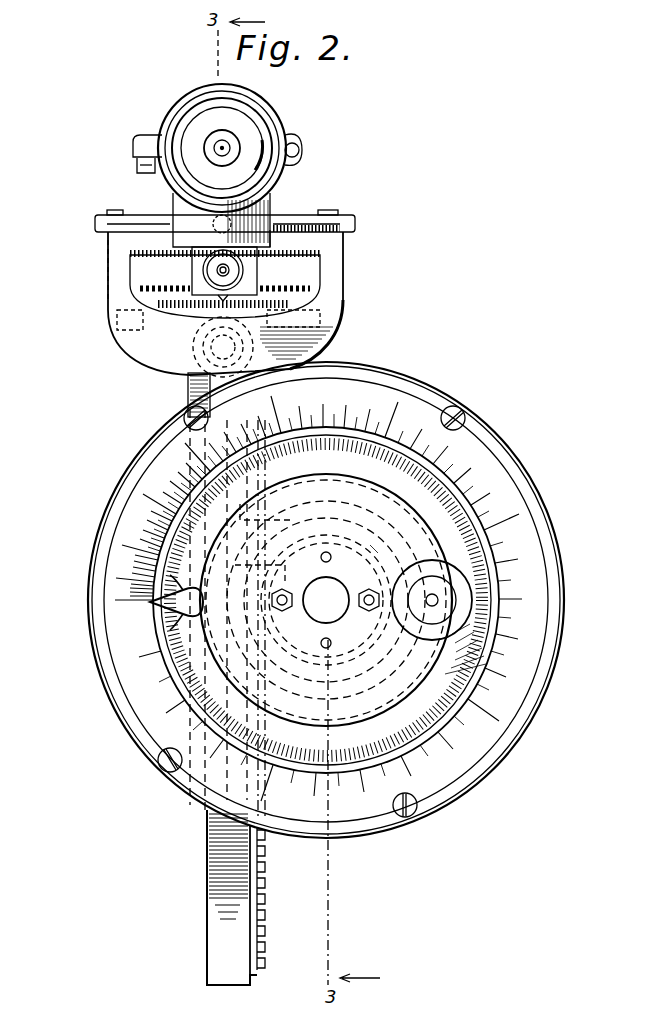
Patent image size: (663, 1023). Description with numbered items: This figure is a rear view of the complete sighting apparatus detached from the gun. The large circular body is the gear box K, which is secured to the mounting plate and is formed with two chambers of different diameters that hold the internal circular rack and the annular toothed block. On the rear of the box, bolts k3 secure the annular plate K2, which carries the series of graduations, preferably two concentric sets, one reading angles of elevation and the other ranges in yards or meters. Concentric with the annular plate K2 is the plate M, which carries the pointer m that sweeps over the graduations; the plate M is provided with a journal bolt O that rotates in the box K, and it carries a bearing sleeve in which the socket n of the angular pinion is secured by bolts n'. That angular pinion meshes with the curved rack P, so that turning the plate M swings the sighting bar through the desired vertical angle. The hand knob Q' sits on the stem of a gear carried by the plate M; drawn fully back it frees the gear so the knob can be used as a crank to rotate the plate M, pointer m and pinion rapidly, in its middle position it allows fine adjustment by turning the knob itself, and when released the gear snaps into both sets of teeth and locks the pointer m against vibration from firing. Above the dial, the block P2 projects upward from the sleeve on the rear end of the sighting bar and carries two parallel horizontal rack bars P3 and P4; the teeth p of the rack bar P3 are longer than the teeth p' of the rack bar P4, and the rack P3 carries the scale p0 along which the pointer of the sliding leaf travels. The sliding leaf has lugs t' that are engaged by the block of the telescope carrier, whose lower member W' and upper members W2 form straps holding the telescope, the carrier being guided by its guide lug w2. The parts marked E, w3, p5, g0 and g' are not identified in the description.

The upper members W2 is at (180, 103).
The eyepiece lens E is at (248, 135).
The lower member W' is at (197, 213).
The guide lug w2 is at (355, 222).
The bar tabs w3 is at (338, 213).
The rack bar P4 is at (287, 242).
The block P2 is at (330, 347).
The teeth p' is at (189, 286).
The teeth p is at (190, 298).
The casing side wall p5 is at (110, 258).
The scale p0 is at (185, 305).
The lugs t' is at (207, 353).
The gear plate g0 is at (214, 270).
The gear pivot g' is at (253, 271).
The rack bar P3 is at (307, 293).
The curved rack P is at (270, 920).
The gear box K is at (525, 728).
The annular plate K2 is at (505, 492).
The bolts k3 is at (417, 813).
The plate M is at (362, 696).
The pointer m is at (150, 602).
The journal bolt O is at (326, 600).
The socket n is at (325, 586).
The bolts n' is at (331, 596).
The hand knob Q' is at (495, 617).